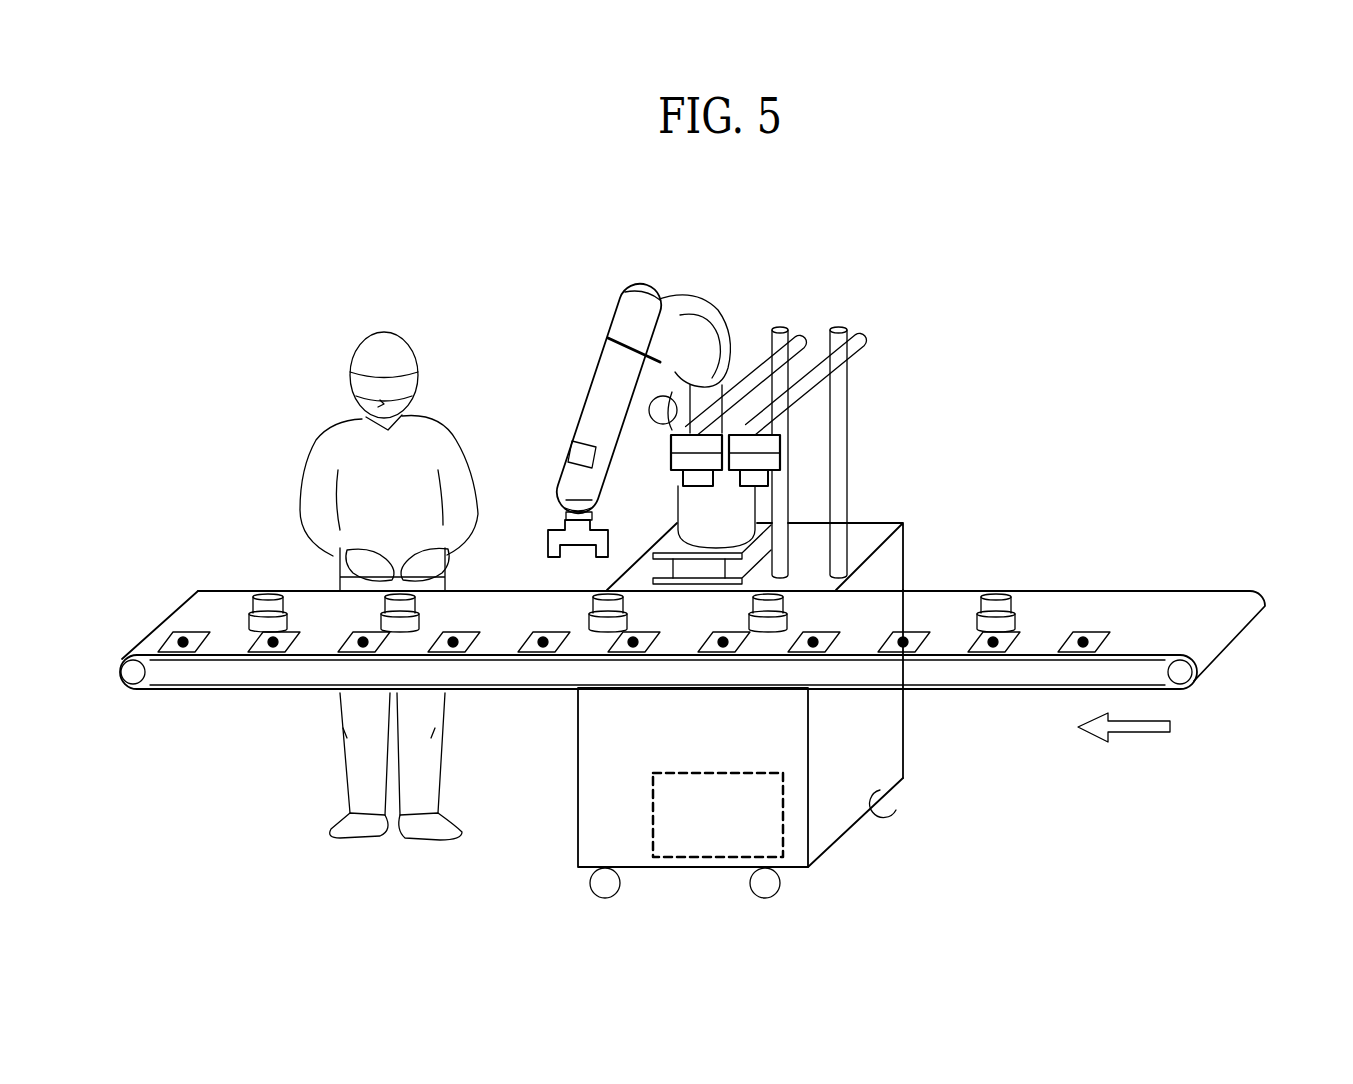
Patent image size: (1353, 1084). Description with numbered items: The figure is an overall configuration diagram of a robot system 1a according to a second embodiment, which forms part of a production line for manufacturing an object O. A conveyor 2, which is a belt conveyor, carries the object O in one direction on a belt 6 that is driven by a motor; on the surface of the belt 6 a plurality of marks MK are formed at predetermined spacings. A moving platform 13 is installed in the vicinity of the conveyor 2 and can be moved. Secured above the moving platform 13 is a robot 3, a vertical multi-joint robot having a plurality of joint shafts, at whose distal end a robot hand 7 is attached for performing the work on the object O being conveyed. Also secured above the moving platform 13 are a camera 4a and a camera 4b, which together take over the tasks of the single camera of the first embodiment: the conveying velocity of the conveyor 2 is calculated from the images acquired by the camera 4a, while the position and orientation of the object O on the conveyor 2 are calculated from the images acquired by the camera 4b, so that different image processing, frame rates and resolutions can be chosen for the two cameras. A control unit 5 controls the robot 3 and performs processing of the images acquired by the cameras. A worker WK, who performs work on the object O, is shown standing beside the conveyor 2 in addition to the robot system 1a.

The robot system 1a is at (246, 264).
The conveyor 2 is at (705, 637).
The robot 3 is at (706, 415).
The camera 4a is at (681, 461).
The camera 4b is at (771, 444).
The control unit 5 is at (712, 773).
The belt 6 is at (1180, 600).
The robot hand 7 is at (551, 540).
The moving platform 13 is at (873, 535).
The worker WK is at (345, 445).
The marks MK is at (910, 636).
The object O is at (996, 595).